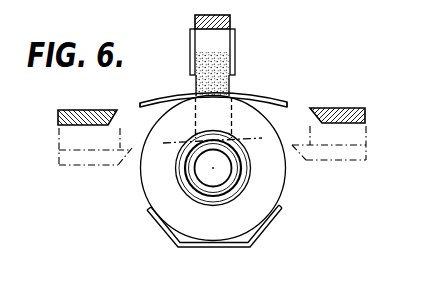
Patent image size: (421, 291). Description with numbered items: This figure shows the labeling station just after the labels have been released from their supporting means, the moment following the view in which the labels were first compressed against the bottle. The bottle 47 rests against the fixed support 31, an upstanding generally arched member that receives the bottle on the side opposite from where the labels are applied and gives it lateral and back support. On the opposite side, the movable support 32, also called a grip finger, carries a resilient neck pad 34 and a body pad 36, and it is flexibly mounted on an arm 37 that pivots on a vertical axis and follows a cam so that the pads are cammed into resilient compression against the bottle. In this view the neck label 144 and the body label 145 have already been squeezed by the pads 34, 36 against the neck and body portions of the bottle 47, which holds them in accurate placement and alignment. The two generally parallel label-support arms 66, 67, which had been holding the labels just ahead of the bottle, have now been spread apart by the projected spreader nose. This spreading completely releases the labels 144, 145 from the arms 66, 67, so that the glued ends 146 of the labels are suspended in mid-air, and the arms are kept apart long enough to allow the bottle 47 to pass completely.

The fixed support 31 is at (256, 244).
The movable support 32 is at (240, 32).
The neck pad 34 is at (233, 109).
The body pad 36 is at (231, 91).
The arm 37 is at (270, 4).
The bottle 47 is at (273, 183).
The label-support arm 66 is at (367, 120).
The label-support arm 67 is at (58, 121).
The neck label 144 is at (176, 134).
The body label 145 is at (174, 101).
The glued ends 146 is at (143, 108).